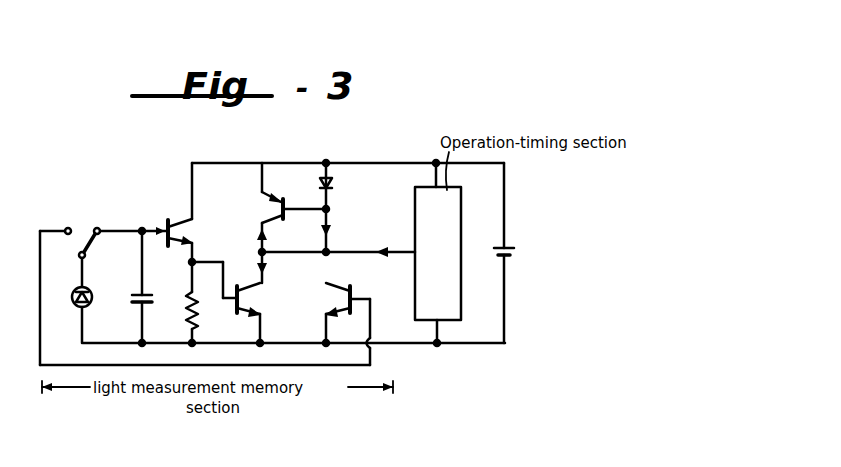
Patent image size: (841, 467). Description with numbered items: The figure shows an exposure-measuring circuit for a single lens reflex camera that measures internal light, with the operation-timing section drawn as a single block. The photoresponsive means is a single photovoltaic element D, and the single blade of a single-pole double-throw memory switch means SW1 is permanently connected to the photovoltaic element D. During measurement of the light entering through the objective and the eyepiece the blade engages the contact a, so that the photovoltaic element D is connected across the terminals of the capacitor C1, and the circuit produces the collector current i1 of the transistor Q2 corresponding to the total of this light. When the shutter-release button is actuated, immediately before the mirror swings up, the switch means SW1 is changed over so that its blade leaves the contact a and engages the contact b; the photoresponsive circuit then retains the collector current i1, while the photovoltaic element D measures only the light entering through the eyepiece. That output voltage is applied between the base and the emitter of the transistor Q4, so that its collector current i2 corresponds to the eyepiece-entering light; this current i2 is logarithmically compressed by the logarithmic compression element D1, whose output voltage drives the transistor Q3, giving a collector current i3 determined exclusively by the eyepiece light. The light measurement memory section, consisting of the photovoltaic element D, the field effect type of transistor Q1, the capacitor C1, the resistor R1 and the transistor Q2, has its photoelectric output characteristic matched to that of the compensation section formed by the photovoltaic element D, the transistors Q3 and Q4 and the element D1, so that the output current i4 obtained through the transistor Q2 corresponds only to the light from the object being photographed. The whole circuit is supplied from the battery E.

The memory switch means SW1 is at (82, 228).
The contact a is at (131, 222).
The contact b is at (55, 222).
The photovoltaic element D is at (88, 300).
The capacitor C1 is at (148, 287).
The field effect type of transistor Q1 is at (172, 212).
The resistor R1 is at (203, 302).
The transistor Q2 is at (260, 313).
The transistor Q3 is at (278, 223).
The transistor Q4 is at (337, 324).
The logarithmic compression element D1 is at (338, 186).
The battery / power source E is at (510, 253).
The collector current i1 is at (267, 275).
The collector current i2 is at (333, 230).
The collector current i3 is at (251, 241).
The output current i4 is at (387, 243).